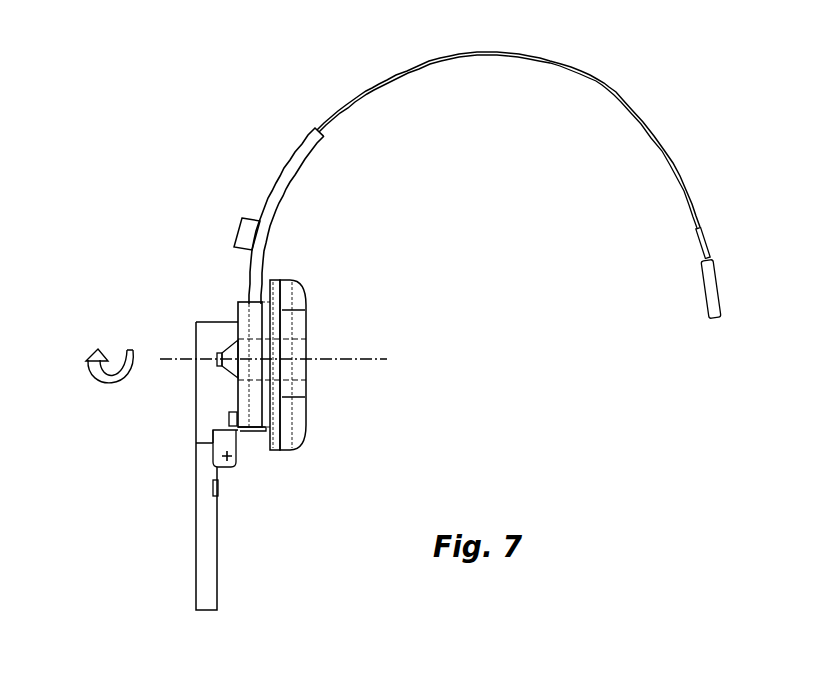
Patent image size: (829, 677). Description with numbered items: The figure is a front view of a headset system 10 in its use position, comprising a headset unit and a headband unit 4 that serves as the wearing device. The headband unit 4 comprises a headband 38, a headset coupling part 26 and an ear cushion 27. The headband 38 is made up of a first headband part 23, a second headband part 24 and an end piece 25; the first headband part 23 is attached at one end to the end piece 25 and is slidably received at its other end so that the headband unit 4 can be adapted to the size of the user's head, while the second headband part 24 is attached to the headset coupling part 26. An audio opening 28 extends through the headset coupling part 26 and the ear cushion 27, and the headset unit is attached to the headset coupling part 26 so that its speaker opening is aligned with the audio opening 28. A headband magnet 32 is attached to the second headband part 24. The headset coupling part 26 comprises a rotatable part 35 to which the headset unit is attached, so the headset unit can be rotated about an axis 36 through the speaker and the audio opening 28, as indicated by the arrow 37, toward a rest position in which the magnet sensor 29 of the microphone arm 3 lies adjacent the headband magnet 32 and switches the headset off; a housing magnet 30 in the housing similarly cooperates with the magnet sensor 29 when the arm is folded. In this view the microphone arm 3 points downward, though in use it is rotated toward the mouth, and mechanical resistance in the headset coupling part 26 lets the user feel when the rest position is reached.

The microphone arm 3 is at (203, 558).
The headband unit 4 is at (240, 67).
The headset system 10 is at (606, 500).
The first headband part 23 is at (440, 57).
The second headband part 24 is at (291, 172).
The end piece 25 is at (703, 272).
The headset coupling part 26 is at (253, 431).
The ear cushion 27 is at (285, 413).
The audio opening 28 is at (300, 350).
The magnet sensor 29 is at (213, 488).
The housing magnet 30 is at (230, 419).
The headband magnet 32 is at (243, 236).
The rotatable part 35 is at (241, 430).
The axis 36 is at (370, 362).
The arrow 37 is at (85, 368).
The headband 38 is at (625, 97).